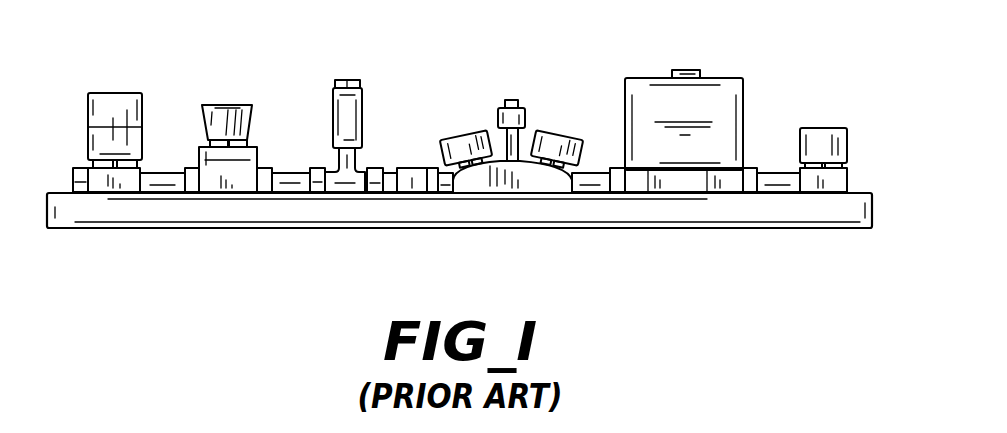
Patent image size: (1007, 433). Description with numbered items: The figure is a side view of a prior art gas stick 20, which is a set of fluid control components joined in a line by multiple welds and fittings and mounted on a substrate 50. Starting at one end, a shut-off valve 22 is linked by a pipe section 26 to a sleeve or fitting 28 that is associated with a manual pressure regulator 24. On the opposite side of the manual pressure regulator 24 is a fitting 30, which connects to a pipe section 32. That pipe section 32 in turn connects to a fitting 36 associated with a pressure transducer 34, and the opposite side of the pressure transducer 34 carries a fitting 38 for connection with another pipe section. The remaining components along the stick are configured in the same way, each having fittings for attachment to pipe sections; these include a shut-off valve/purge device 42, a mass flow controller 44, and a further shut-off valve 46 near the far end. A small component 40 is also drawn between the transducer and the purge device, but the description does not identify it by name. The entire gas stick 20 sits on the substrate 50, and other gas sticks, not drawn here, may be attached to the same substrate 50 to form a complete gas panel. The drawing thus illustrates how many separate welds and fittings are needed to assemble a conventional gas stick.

The gas stick 20 is at (573, 81).
The shut-off valve 22 is at (113, 103).
The manual pressure regulator 24 is at (225, 110).
The pipe section 26 is at (150, 188).
The sleeve or fitting 28 is at (193, 188).
The fitting 30 is at (268, 188).
The pipe section 32 is at (295, 178).
The pressure transducer 34 is at (362, 108).
The fitting 36 is at (317, 188).
The fitting 38 is at (378, 170).
The filter 40 is at (410, 188).
The shut-off valve/purge device 42 is at (522, 170).
The mass flow controller 44 is at (687, 147).
The shut-off valve 46 is at (819, 140).
The substrate 50 is at (815, 212).